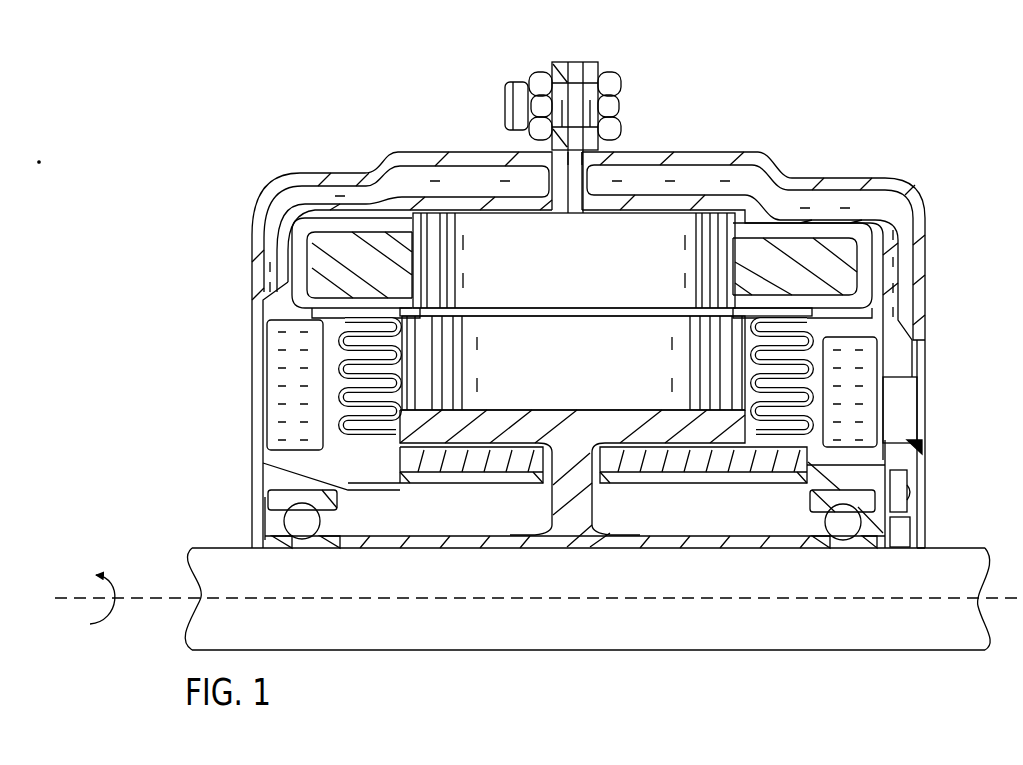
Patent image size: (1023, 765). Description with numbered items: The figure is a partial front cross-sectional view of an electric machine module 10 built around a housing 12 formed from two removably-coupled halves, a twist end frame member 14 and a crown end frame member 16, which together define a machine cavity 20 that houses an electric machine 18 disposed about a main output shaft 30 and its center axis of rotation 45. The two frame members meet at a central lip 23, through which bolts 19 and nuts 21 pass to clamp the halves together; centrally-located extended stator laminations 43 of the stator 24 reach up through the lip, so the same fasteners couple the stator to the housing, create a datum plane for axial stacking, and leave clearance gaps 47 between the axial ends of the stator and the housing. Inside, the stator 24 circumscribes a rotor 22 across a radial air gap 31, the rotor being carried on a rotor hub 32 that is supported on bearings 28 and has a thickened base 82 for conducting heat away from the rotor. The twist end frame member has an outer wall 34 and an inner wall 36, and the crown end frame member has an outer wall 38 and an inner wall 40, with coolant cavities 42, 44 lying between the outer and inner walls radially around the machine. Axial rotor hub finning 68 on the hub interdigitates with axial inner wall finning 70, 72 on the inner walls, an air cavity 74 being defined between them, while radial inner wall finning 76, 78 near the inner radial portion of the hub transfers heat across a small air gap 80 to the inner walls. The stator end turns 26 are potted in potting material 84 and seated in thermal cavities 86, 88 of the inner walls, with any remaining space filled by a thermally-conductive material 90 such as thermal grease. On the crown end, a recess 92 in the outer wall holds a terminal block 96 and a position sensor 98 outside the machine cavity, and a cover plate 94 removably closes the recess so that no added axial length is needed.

The electric machine module 10 is at (699, 74).
The housing 12 is at (394, 146).
The twist end frame member 14 is at (258, 282).
The crown end frame member 16 is at (924, 264).
The electric machine 18 is at (668, 198).
The bolts 19 is at (608, 107).
The machine cavity 20 is at (360, 497).
The nuts 21 is at (537, 97).
The rotor 22 is at (627, 387).
The central lip 23 is at (585, 52).
The stator 24 is at (518, 213).
The stator end turns 26 is at (318, 270).
The bearings 28 is at (300, 521).
The main output shaft 30 is at (200, 574).
The radial air gap 31 is at (660, 298).
The rotor hub 32 is at (483, 428).
The outer wall 34 is at (260, 366).
The inner wall 36 is at (334, 318).
The outer wall 38 is at (928, 326).
The inner wall 40 is at (872, 290).
The coolant cavity 42 is at (412, 175).
The extended stator laminations 43 is at (580, 153).
The coolant cavity 44 is at (820, 202).
The center axis of rotation 45 is at (140, 601).
The clearance gaps 47 is at (336, 218).
The axial rotor hub finning 68 is at (330, 410).
The axial inner wall finning 70 is at (340, 375).
The axial inner wall finning 72 is at (795, 360).
The air cavity 74 is at (313, 313).
The radial inner wall finning 76 is at (397, 463).
The radial inner wall finning 78 is at (735, 462).
The air gap 80 is at (577, 447).
The base 82 is at (667, 430).
The potting material 84 is at (340, 224).
The thermal cavity 86 is at (398, 217).
The thermal cavity 88 is at (837, 226).
The thermally-conductive material 90 is at (305, 222).
The recess 92 is at (915, 449).
The cover plate 94 is at (923, 538).
The terminal block 96 is at (910, 423).
The position sensor 98 is at (900, 530).